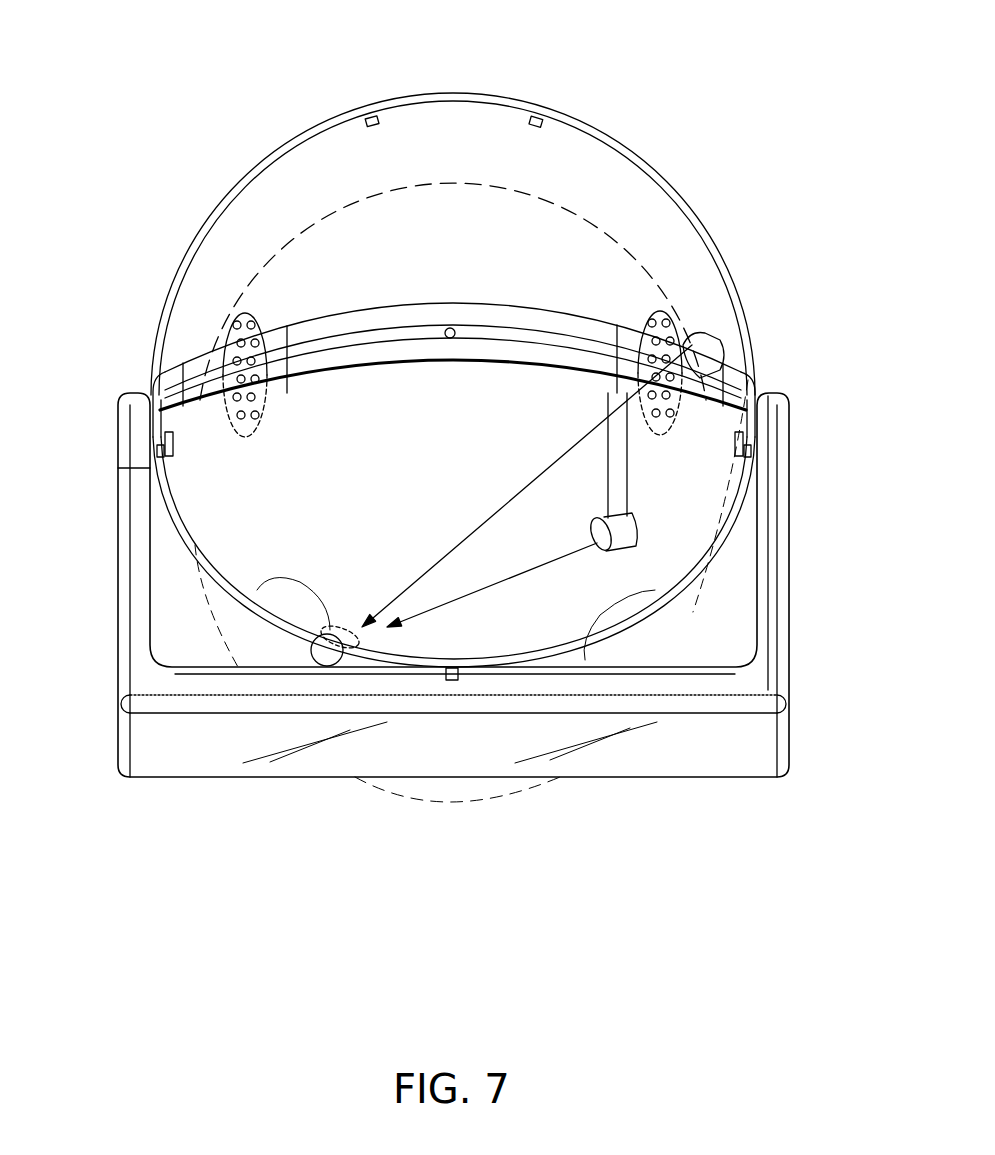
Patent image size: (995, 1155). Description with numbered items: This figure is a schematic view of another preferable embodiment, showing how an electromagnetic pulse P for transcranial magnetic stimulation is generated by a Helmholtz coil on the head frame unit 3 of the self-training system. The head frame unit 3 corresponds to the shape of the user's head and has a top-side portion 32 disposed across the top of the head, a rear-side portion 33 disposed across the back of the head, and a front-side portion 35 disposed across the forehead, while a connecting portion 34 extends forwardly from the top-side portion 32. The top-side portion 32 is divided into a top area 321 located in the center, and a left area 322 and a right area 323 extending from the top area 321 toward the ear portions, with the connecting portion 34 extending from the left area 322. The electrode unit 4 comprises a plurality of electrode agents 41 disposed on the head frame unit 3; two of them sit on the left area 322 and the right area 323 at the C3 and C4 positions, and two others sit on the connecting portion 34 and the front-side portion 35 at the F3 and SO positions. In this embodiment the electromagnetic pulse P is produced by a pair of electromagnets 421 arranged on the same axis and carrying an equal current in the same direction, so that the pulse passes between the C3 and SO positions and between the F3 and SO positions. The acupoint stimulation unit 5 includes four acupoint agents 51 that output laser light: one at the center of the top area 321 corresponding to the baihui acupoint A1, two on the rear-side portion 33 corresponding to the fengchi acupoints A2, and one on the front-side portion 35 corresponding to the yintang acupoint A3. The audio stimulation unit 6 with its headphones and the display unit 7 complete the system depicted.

The head frame unit 3 is at (196, 204).
The rear-side portion 33 is at (672, 190).
The acupoint stimulation unit 5 is at (562, 124).
The acupoint agent 51 is at (375, 118).
The top-side portion 32 is at (514, 315).
The top area 321 is at (470, 326).
The left area 322 is at (629, 340).
The right area 323 is at (200, 368).
The electrode agent 41 is at (230, 330).
The connecting portion 34 is at (620, 442).
The electromagnet 421 is at (623, 524).
The electrode unit 4 is at (657, 559).
The front-side portion 35 is at (637, 617).
The audio stimulation unit 6 is at (151, 476).
The display unit 7 is at (628, 792).
The baihui acupoint A1 is at (448, 342).
The fengchi acupoint A2 is at (366, 122).
The yintang acupoint A3 is at (453, 668).
The electromagnetic pulse P is at (533, 570).